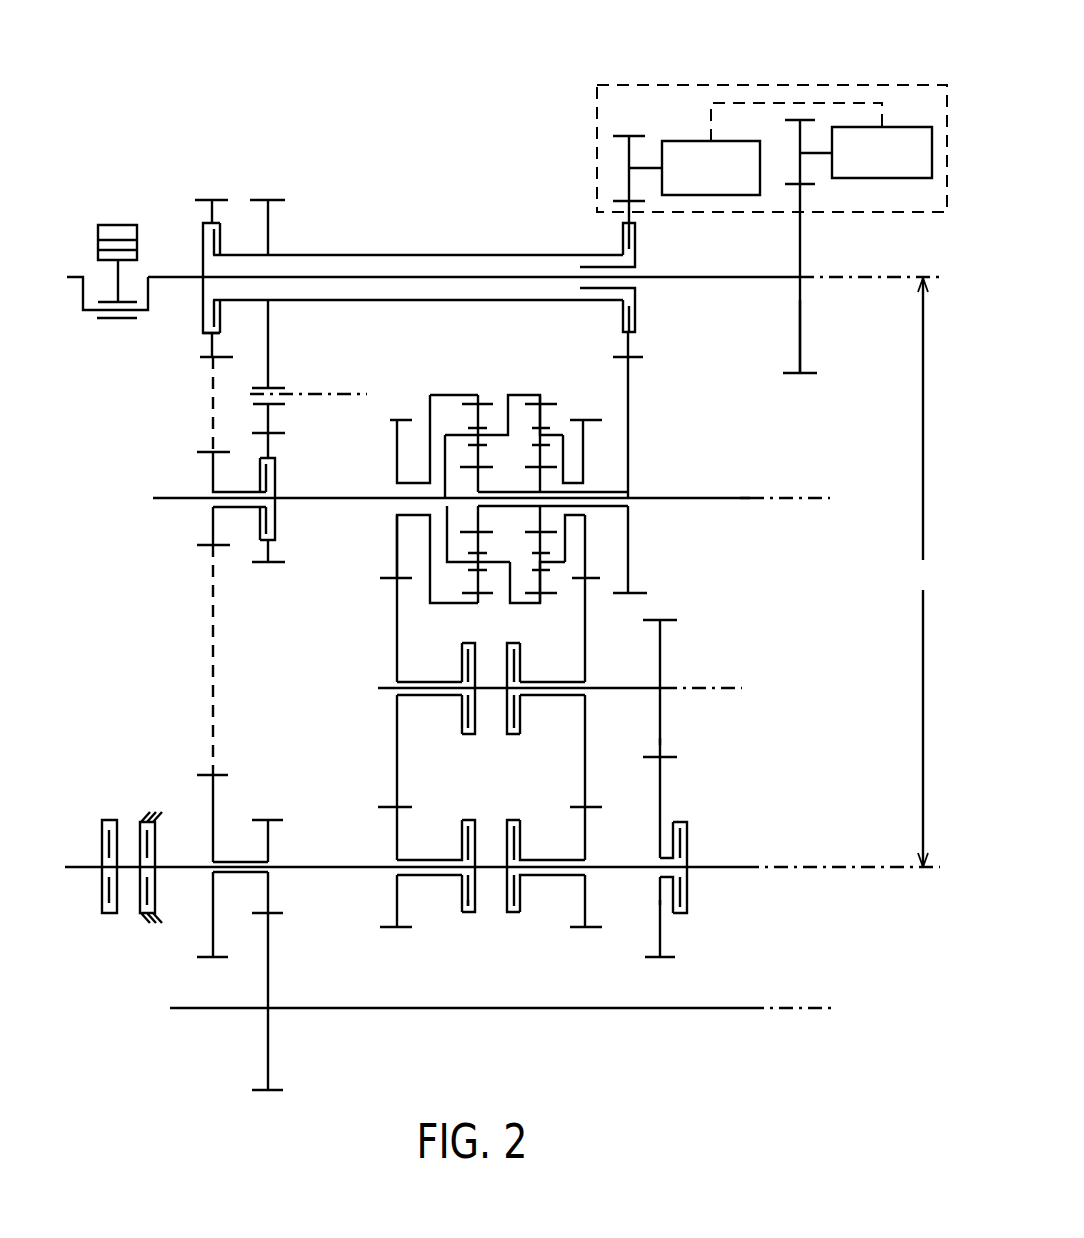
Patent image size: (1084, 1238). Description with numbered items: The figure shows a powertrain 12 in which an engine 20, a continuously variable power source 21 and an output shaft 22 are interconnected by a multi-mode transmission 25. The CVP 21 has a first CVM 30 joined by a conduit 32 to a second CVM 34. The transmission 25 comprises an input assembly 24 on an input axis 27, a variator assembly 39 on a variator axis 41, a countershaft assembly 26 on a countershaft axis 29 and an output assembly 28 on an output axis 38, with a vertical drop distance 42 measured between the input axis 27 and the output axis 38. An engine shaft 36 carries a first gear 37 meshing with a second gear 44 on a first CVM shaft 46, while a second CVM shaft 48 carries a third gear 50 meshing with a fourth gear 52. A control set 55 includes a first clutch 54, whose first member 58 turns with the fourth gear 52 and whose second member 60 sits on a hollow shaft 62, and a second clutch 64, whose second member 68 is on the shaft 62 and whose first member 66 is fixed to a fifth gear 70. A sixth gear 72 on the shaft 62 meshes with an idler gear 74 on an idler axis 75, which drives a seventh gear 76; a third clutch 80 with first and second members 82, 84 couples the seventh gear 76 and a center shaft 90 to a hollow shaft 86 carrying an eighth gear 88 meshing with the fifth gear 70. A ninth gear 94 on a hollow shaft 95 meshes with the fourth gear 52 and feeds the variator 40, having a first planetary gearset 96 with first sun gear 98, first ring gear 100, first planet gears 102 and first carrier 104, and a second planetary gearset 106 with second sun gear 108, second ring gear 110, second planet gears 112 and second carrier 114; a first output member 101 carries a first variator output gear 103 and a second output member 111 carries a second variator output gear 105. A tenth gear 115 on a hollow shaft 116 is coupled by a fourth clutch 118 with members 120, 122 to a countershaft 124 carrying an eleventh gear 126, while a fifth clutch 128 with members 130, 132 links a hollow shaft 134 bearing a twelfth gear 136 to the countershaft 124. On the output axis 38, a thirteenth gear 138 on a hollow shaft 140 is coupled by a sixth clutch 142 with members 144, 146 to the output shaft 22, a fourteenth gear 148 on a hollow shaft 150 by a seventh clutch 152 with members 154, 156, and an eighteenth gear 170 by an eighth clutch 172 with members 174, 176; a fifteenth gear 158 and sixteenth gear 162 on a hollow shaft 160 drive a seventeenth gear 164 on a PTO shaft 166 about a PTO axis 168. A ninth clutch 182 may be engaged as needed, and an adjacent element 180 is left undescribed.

The powertrain 12 is at (183, 125).
The engine 20 is at (92, 247).
The continuously variable power source 21 is at (855, 85).
The output shaft 22 is at (712, 867).
The input assembly 24 is at (810, 320).
The transmission 25 is at (185, 660).
The countershaft assembly 26 is at (707, 705).
The input axis 27 is at (830, 278).
The output assembly 28 is at (733, 922).
The countershaft axis 29 is at (702, 688).
The first CVM 30 is at (903, 127).
The conduit 32 is at (793, 102).
The second CVM 34 is at (682, 141).
The engine shaft 36 is at (173, 280).
The first gear 37 is at (800, 233).
The output axis 38 is at (788, 867).
The variator assembly 39 is at (737, 512).
The variator 40 is at (388, 383).
The variator axis 41 is at (793, 498).
The vertical drop distance 42 is at (923, 572).
The second gear 44 is at (800, 167).
The first CVM shaft 46 is at (817, 153).
The second CVM shaft 48 is at (645, 167).
The third gear 50 is at (629, 148).
The fourth gear 52 is at (628, 212).
The first clutch 54 is at (643, 305).
The control set 55 is at (195, 218).
The first member 58 is at (643, 325).
The second member 60 is at (623, 318).
The shaft 62 is at (378, 254).
The second clutch 64 is at (218, 218).
The first member 66 is at (207, 337).
The second member 68 is at (217, 318).
The fifth gear 70 is at (207, 347).
The sixth gear 72 is at (272, 312).
The idler gear 74 is at (275, 358).
The idler axis 75 is at (345, 397).
The seventh gear 76 is at (268, 447).
The third clutch 80 is at (283, 530).
The first member 82 is at (275, 480).
The second member 84 is at (263, 520).
The hollow shaft 86 is at (242, 490).
The eighth gear 88 is at (213, 523).
The shaft 90 is at (362, 498).
The ninth gear 94 is at (630, 370).
The hollow shaft 95 is at (610, 490).
The first planetary gearset 96 is at (535, 390).
The first sun gear 98 is at (537, 478).
The first ring gear 100 is at (543, 403).
The first output member 101 is at (583, 518).
The first planet gears 102 is at (540, 418).
The first variator output gear 103 is at (590, 528).
The first carrier 104 is at (562, 563).
The second variator output gear 105 is at (413, 515).
The second planetary gearset 106 is at (468, 390).
The second sun gear 108 is at (473, 517).
The second ring gear 110 is at (477, 602).
The second output member 111 is at (397, 547).
The second planet gears 112 is at (480, 542).
The second carrier 114 is at (448, 562).
The tenth gear 115 is at (587, 670).
The hollow shaft 116 is at (548, 695).
The fourth clutch 118 is at (507, 742).
The first member 120 is at (522, 660).
The second member 122 is at (513, 733).
The countershaft 124 is at (623, 692).
The eleventh gear 126 is at (660, 738).
The fifth clutch 128 is at (450, 643).
The first member 130 is at (460, 662).
The second member 132 is at (458, 713).
The hollow shaft 134 is at (432, 697).
The twelfth gear 136 is at (395, 662).
The thirteenth gear 138 is at (587, 833).
The hollow shaft 140 is at (550, 860).
The sixth clutch 142 is at (517, 920).
The first member 144 is at (518, 892).
The second member 146 is at (520, 915).
The fourteenth gear 148 is at (397, 835).
The hollow shaft 150 is at (432, 875).
The seventh clutch 152 is at (468, 917).
The first member 154 is at (462, 890).
The second member 156 is at (462, 820).
The fifteenth gear 158 is at (213, 820).
The hollow shaft 160 is at (240, 873).
The sixteenth gear 162 is at (270, 850).
The seventeenth gear 164 is at (270, 982).
The PTO shaft 166 is at (345, 1008).
The PTO axis 168 is at (788, 1008).
The eighteenth gear 170 is at (660, 790).
The eighth clutch 172 is at (685, 925).
The first member 174 is at (683, 823).
The second member 176 is at (687, 893).
The brake 180 is at (140, 920).
The ninth clutch 182 is at (98, 918).